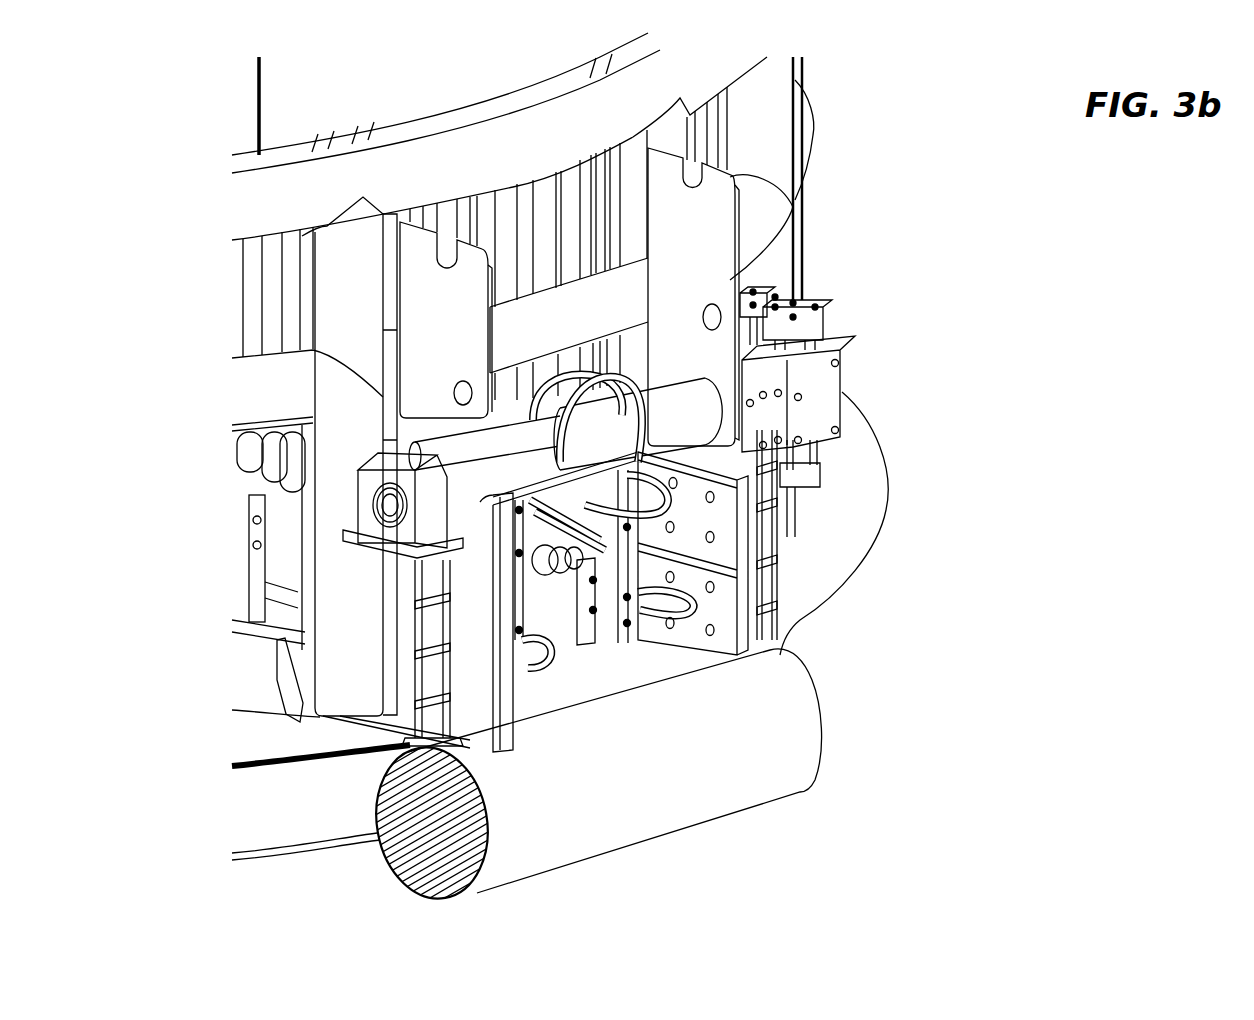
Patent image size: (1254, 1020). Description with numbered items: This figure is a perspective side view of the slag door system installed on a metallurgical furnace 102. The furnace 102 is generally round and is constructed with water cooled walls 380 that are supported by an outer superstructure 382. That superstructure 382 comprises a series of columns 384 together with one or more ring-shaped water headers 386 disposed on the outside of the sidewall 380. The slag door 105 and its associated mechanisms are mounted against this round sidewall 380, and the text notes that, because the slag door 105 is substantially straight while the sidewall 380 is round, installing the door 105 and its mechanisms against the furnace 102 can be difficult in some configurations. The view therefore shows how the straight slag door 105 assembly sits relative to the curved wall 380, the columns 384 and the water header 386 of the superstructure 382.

The metallurgical furnace 102 is at (212, 318).
The slag door 105 is at (571, 662).
The water cooled wall 380 is at (541, 237).
The outer superstructure 382 is at (920, 157).
The column 384 is at (790, 147).
The ring-shaped water header 386 is at (812, 183).